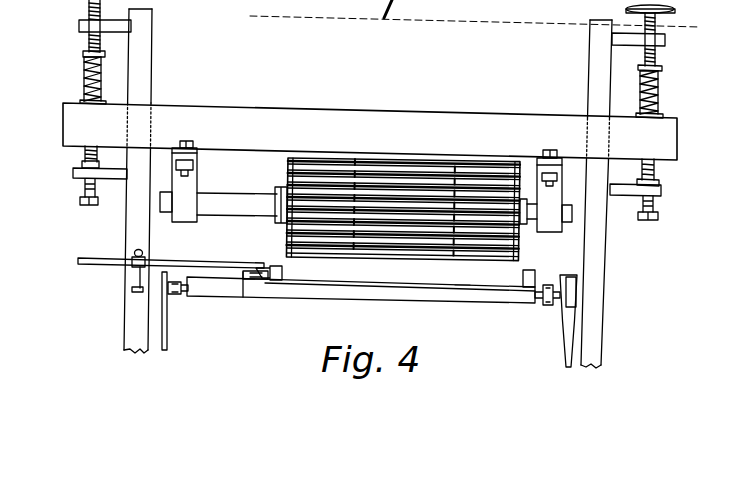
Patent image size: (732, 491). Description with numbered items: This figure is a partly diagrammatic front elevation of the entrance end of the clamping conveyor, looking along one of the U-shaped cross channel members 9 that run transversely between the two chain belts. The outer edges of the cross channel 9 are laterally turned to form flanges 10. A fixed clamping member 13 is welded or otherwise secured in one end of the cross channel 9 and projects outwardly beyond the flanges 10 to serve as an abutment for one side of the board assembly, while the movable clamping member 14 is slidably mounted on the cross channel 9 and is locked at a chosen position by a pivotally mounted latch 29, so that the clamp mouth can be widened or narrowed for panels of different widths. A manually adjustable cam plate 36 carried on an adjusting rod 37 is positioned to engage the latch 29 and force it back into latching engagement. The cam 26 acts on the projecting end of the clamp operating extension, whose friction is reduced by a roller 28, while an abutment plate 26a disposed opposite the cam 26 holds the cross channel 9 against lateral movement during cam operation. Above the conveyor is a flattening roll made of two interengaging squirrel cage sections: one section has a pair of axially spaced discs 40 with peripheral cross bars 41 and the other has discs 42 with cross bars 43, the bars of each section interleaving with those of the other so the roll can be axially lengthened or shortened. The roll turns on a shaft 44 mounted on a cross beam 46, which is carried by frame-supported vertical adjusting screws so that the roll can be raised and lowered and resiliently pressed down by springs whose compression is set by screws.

The cross channel member 9 is at (369, 295).
The flange 10 is at (462, 289).
The clamping member 13 is at (529, 275).
The clamping member 14 is at (278, 266).
The cam 26 is at (560, 338).
The abutment plate 26a is at (168, 342).
The roller 28 is at (172, 294).
The latch 29 is at (267, 281).
The cam plate 36 is at (227, 295).
The adjusting rod 37 is at (169, 259).
The disc 40 is at (520, 244).
The cross bar 41 is at (475, 251).
The disc 42 is at (289, 172).
The cross bar 43 is at (338, 249).
The shaft 44 is at (242, 205).
The cross beam 46 is at (357, 145).